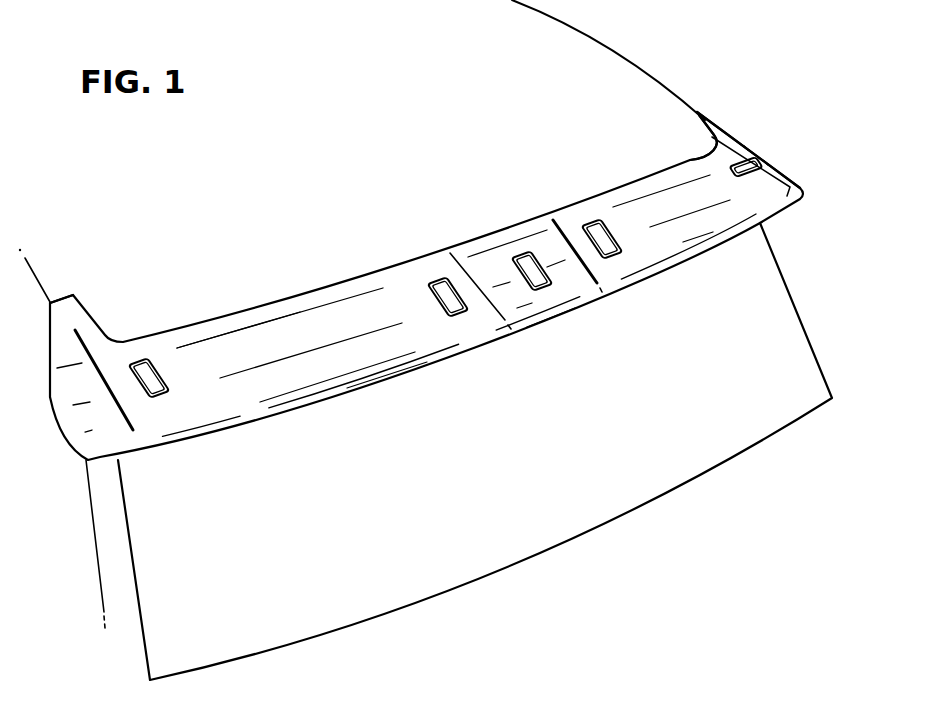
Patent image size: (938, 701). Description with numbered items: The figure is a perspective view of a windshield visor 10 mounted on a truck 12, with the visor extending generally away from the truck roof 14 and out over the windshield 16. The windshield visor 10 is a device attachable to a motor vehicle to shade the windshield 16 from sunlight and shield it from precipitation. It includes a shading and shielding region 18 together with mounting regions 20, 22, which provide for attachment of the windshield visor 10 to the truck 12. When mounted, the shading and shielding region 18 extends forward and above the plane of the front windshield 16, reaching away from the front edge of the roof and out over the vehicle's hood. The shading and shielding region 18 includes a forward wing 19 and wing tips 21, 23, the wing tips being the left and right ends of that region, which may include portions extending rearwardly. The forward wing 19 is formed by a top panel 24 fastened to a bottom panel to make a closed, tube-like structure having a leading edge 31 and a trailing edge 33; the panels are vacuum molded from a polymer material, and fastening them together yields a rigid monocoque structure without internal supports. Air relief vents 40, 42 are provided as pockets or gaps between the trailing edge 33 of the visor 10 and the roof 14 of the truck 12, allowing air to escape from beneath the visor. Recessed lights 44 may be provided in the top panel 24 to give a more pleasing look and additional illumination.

The windshield visor 10 is at (426, 259).
The truck 12 is at (795, 270).
The truck roof 14 is at (305, 197).
The windshield 16 is at (490, 483).
The shading and shielding region 18 is at (488, 230).
The forward wing 19 is at (427, 340).
The mounting region 20 is at (722, 115).
The wing tip 21 is at (713, 127).
The mounting region 22 is at (53, 418).
The wing tip 23 is at (62, 290).
The top panel 24 is at (313, 320).
The leading edge 31 is at (523, 333).
The trailing edge 33 is at (397, 267).
The air relief vent 40 is at (177, 320).
The air relief vent 42 is at (563, 190).
The recessed lights 44 is at (548, 283).